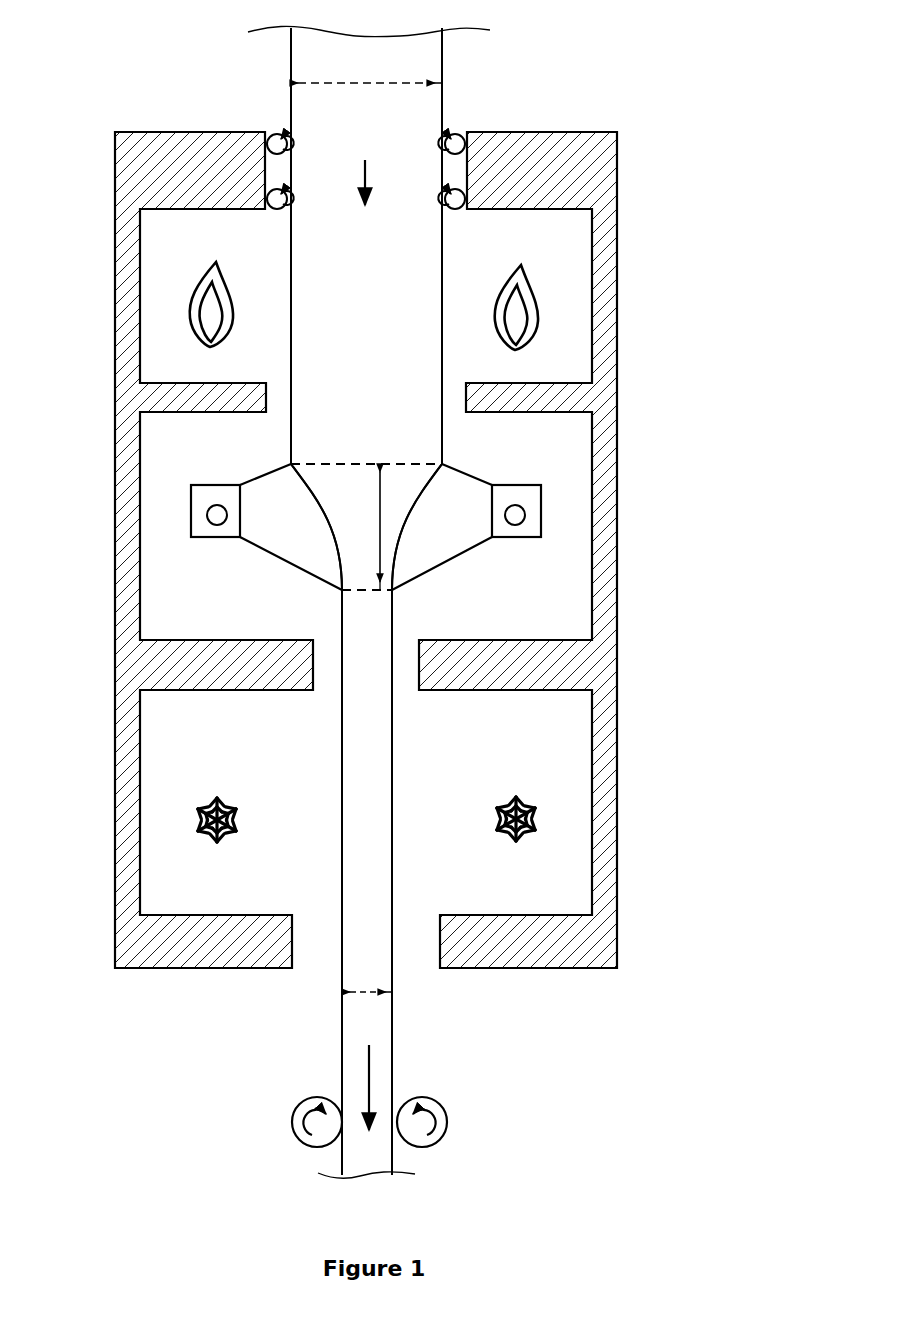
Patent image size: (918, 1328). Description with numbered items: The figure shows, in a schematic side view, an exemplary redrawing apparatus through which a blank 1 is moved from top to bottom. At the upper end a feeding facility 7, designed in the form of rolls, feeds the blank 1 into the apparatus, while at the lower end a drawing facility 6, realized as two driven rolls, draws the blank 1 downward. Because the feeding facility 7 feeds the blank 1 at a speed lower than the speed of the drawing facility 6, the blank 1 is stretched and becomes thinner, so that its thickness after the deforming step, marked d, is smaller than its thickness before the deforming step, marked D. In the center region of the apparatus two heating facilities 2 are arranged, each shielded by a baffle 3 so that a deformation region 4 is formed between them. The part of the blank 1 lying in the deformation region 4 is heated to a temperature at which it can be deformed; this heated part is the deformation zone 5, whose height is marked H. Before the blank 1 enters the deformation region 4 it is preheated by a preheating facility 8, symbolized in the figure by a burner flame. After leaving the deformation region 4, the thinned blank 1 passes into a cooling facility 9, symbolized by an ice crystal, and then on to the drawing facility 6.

The blank 1 is at (380, 295).
The heating facility 2 is at (193, 515).
The baffle 3 is at (187, 532).
The deformation region 4 is at (427, 530).
The deformation zone 5 is at (375, 500).
The drawing facility 6 is at (453, 1112).
The feeding facility 7 is at (272, 133).
The preheating facility 8 is at (533, 288).
The cooling facility 9 is at (543, 813).